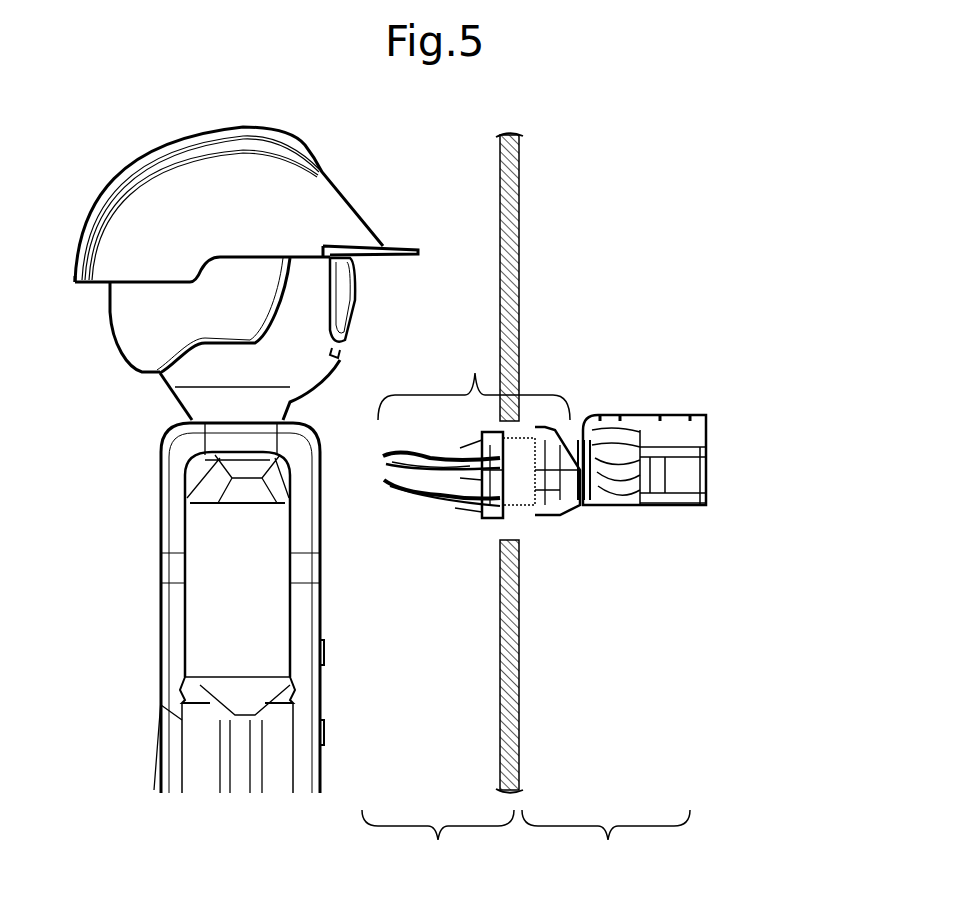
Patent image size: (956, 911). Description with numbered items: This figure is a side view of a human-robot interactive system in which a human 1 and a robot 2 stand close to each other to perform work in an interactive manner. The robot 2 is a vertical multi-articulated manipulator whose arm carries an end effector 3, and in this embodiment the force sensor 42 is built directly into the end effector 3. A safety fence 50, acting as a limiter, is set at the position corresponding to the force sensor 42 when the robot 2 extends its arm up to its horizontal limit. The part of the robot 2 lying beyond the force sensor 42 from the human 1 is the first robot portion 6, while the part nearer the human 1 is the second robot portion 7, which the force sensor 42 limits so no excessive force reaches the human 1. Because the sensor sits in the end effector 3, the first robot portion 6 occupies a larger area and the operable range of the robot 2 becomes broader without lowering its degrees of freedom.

The safety fence 50 is at (520, 270).
The human 1 is at (352, 337).
The robot 2 is at (640, 427).
The end effector 3 is at (474, 380).
The force sensor 42 is at (572, 512).
The second robot portion 7 is at (438, 842).
The first robot portion 6 is at (606, 842).